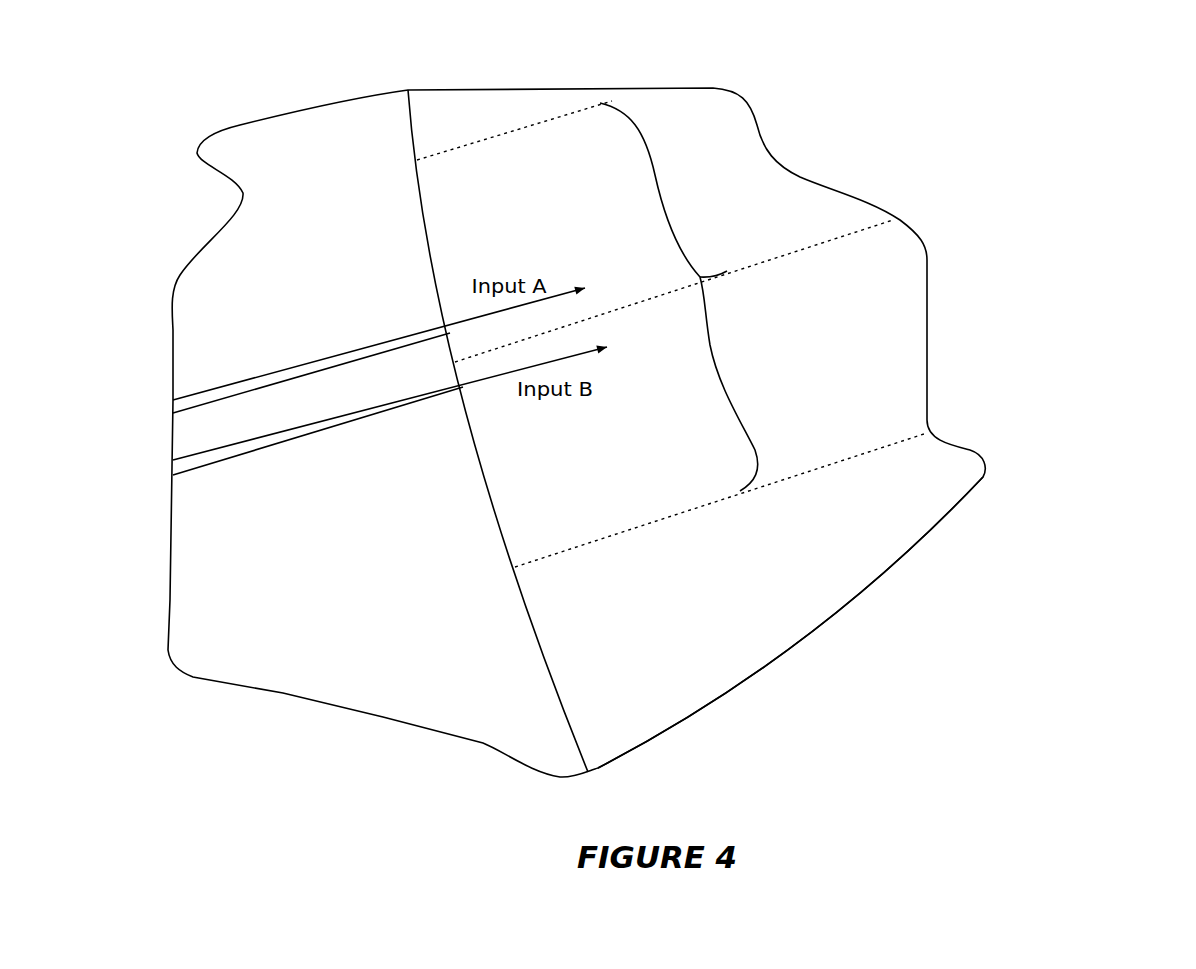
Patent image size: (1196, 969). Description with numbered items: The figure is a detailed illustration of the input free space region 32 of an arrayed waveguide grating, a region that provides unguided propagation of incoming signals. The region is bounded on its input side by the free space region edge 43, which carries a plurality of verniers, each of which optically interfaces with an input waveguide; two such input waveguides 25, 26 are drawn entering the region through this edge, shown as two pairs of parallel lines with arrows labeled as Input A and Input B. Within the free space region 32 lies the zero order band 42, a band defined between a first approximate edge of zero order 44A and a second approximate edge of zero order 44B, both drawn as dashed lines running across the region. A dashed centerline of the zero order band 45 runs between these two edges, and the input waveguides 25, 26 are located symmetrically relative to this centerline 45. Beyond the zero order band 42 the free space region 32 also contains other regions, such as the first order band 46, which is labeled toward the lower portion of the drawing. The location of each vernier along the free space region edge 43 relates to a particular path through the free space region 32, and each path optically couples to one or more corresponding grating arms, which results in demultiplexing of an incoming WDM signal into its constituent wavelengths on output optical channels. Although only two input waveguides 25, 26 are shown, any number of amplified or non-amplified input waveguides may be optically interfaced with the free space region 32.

The input waveguide 25 is at (212, 398).
The input waveguide 26 is at (258, 446).
The input free space region 32 is at (576, 432).
The zero order band 42 is at (756, 297).
The free space region edge 43 is at (425, 135).
The first approximate edge of zero order 44A is at (842, 438).
The second approximate edge of zero order 44B is at (567, 100).
The centerline of the zero order band 45 is at (818, 235).
The first order band 46 is at (655, 645).